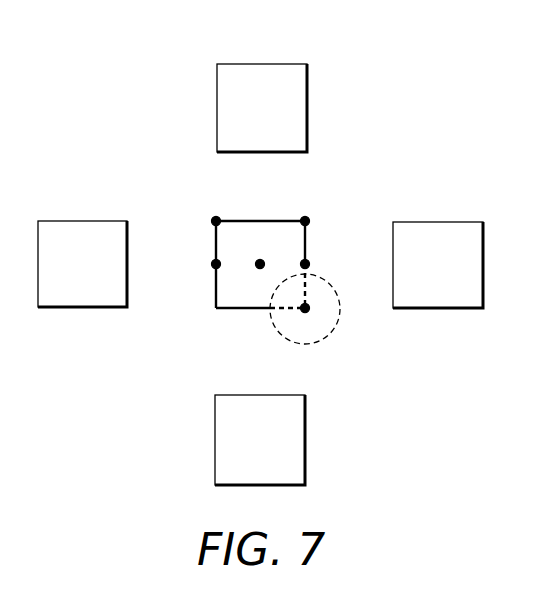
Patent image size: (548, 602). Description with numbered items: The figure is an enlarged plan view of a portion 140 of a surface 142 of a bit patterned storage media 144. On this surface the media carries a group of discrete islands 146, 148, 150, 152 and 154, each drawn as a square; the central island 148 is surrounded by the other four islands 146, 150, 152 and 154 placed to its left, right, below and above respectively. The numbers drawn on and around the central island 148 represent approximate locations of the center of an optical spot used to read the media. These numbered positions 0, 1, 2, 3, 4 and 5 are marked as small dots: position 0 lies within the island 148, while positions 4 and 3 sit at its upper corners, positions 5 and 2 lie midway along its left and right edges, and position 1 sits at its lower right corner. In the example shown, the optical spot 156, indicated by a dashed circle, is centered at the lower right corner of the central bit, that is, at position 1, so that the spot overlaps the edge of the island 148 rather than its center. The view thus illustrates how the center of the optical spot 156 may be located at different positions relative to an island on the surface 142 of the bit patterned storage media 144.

The portion 140 is at (400, 122).
The surface 142 is at (125, 128).
The bit patterned storage media 144 is at (440, 428).
The island 146 is at (70, 309).
The island 148 is at (262, 220).
The island 150 is at (434, 220).
The island 152 is at (215, 442).
The island 154 is at (257, 63).
The optical spot 156 is at (340, 322).
The optical spot center position 0 is at (260, 268).
The optical spot center position 1 is at (305, 313).
The optical spot center position 2 is at (305, 264).
The optical spot center position 3 is at (305, 221).
The optical spot center position 4 is at (216, 221).
The optical spot center position 5 is at (216, 264).